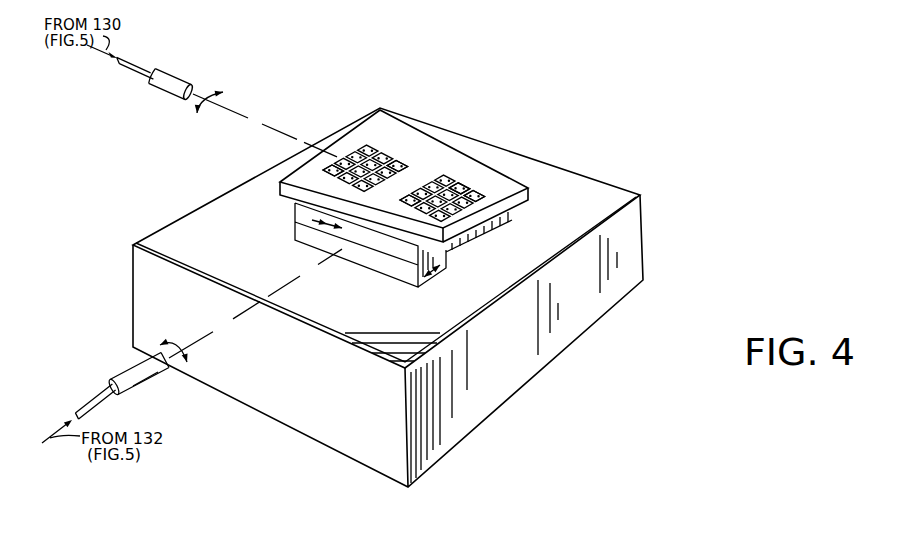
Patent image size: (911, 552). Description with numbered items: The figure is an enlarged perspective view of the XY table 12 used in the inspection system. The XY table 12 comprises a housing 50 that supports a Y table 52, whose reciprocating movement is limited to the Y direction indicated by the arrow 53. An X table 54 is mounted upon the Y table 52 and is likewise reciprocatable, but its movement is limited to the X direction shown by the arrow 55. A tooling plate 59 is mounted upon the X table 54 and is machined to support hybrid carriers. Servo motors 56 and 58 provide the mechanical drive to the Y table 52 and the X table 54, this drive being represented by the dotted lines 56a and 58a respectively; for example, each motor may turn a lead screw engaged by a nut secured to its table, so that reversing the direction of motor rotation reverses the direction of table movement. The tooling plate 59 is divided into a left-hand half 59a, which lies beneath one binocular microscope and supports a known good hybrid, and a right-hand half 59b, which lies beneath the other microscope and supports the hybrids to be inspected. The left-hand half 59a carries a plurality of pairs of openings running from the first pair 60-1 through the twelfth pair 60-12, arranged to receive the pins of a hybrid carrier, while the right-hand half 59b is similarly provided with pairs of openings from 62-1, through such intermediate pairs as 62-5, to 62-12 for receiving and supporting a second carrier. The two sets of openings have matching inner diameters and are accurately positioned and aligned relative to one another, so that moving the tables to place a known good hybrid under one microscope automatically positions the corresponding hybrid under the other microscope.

The XY table 12 is at (592, 401).
The housing 50 is at (580, 295).
The Y table 52 is at (393, 268).
The arrow 53 is at (442, 272).
The X table 54 is at (370, 238).
The arrow 55 is at (312, 219).
The servo motor 56 is at (128, 360).
The dotted line 56a is at (214, 334).
The servo motor 58 is at (173, 70).
The dotted line 58a is at (226, 102).
The tooling plate 59 is at (355, 143).
The left-hand half of tooling plate 59a is at (392, 153).
The right-hand half of tooling plate 59b is at (483, 180).
The pair of openings 60-1 is at (333, 171).
The pair of openings 60-12 is at (404, 163).
The pair of openings 62-1 is at (410, 201).
The pair of openings 62-5 is at (466, 190).
The pair of openings 62-12 is at (527, 195).